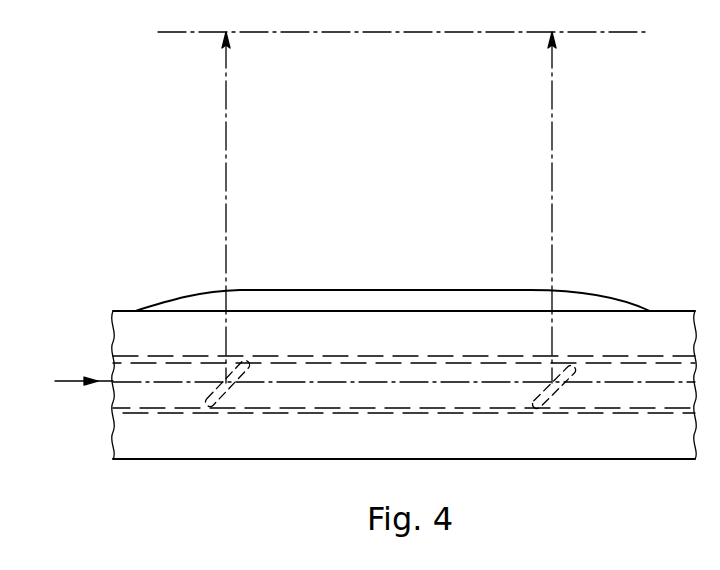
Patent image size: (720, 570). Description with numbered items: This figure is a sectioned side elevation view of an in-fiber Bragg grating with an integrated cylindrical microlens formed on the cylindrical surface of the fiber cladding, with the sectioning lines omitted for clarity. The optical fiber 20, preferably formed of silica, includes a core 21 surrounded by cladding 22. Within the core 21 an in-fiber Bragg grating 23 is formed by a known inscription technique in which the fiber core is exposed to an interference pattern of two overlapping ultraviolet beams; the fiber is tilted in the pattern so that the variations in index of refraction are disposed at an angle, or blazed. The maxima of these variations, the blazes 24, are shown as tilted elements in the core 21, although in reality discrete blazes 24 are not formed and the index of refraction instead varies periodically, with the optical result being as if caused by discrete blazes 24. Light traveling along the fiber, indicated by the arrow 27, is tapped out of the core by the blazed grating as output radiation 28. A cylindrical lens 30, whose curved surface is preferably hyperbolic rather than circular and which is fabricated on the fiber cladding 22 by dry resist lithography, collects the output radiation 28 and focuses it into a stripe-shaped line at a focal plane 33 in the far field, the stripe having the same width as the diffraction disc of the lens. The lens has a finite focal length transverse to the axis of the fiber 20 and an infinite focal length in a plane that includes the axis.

The optical fiber 20 is at (225, 459).
The core 21 is at (605, 397).
The cladding 22 is at (635, 437).
The in-fiber Bragg grating 23 is at (310, 407).
The blazes 24 is at (577, 373).
The flow direction arrow 27 is at (73, 384).
The output radiation 28 is at (552, 155).
The cylindrical lens 30 is at (582, 303).
The focal plane 33 is at (597, 34).